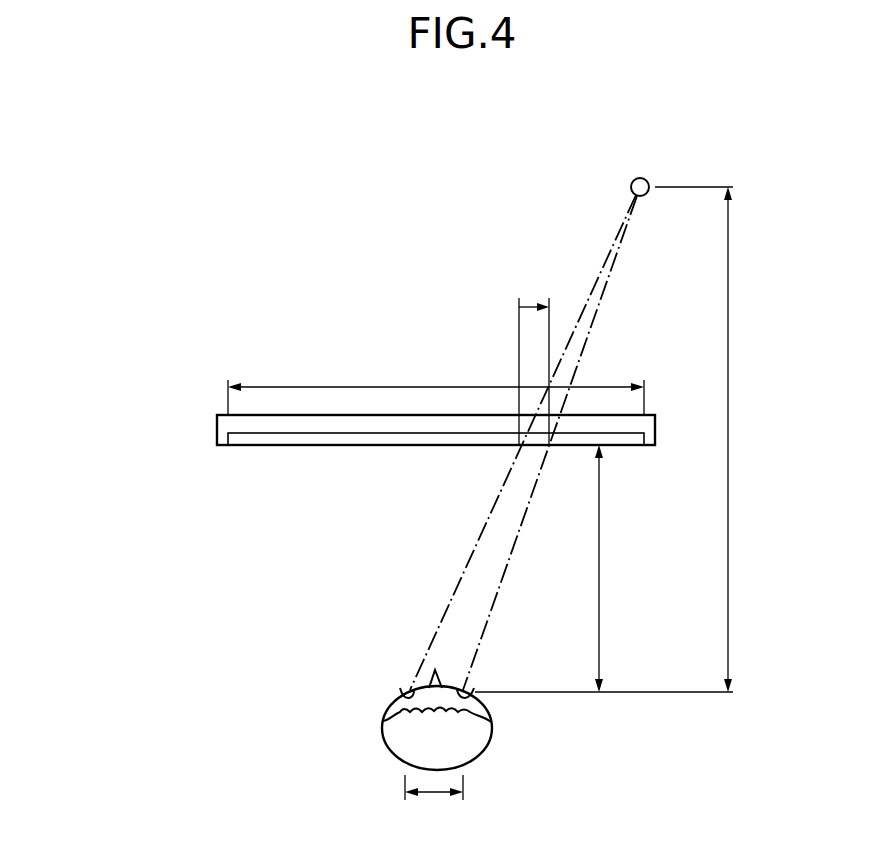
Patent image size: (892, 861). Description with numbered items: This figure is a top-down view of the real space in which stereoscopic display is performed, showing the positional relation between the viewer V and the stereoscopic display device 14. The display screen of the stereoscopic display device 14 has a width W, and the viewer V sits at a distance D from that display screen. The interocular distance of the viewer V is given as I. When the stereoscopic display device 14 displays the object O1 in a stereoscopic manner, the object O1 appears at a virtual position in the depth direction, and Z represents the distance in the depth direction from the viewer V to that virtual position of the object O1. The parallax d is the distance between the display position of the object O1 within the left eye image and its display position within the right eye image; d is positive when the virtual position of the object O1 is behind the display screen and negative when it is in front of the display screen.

The stereoscopic display device 14 is at (217, 428).
The object O1 is at (640, 178).
The viewer V is at (384, 715).
The degree of parallax d is at (534, 359).
The width of the display screen W is at (436, 385).
The distance in the depth direction to the virtual object position Z is at (740, 439).
The distance from the viewer to the display screen D is at (610, 568).
The interocular distance I is at (434, 801).